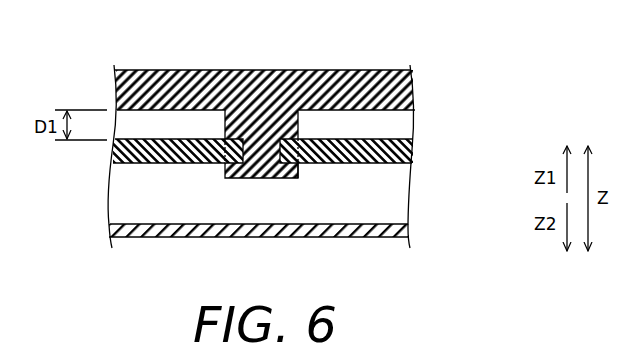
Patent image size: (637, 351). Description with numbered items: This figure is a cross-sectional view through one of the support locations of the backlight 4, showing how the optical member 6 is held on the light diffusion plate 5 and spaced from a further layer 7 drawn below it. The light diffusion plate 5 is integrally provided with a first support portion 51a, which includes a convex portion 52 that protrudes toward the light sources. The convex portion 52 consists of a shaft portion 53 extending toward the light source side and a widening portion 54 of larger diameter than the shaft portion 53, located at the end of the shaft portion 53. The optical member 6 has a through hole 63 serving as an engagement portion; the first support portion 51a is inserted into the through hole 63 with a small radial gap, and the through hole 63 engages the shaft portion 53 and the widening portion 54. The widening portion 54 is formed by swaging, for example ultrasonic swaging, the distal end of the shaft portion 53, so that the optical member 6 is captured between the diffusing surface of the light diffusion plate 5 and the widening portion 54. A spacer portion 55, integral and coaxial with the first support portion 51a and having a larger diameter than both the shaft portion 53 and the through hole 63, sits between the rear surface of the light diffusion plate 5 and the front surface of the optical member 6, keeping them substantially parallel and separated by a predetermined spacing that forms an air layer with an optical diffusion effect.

The backlight 4 is at (310, 156).
The light diffusion plate 5 is at (415, 88).
The optical member 6 is at (298, 137).
The second insulating layer 7 is at (409, 228).
The first support portion 51a is at (309, 169).
The convex portion 52 is at (258, 179).
The shaft portion 53 is at (233, 152).
The widening portion 54 is at (224, 173).
The spacer portion 55 is at (224, 113).
The through hole 63 is at (285, 146).